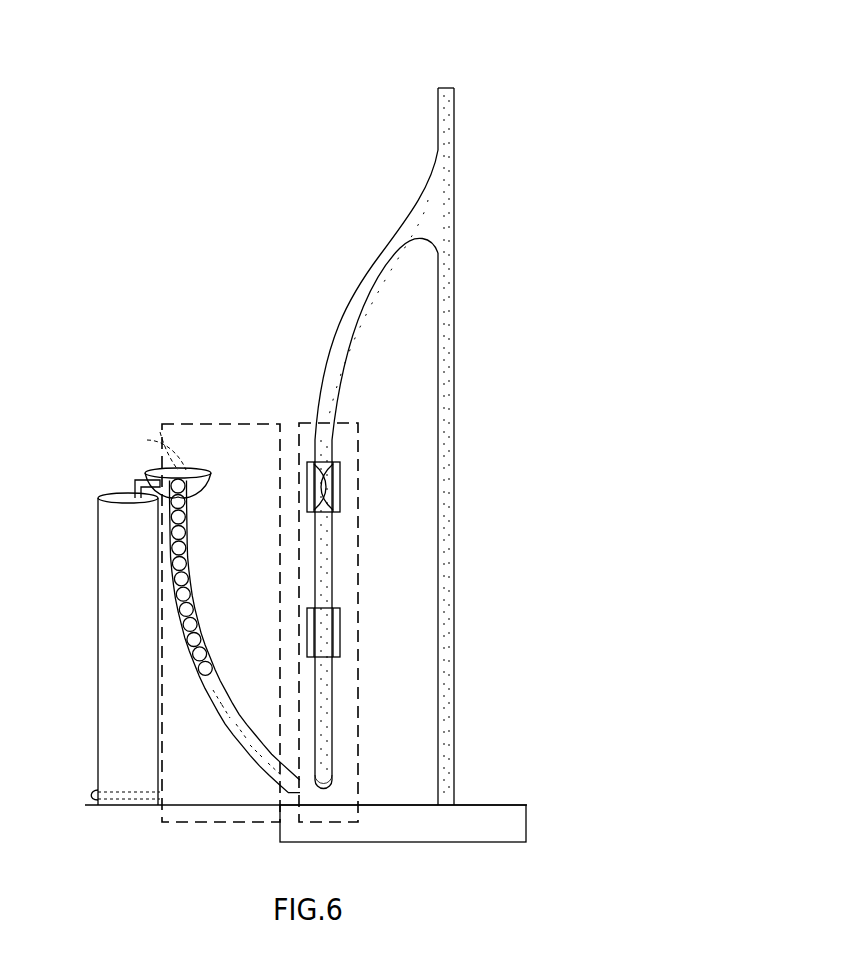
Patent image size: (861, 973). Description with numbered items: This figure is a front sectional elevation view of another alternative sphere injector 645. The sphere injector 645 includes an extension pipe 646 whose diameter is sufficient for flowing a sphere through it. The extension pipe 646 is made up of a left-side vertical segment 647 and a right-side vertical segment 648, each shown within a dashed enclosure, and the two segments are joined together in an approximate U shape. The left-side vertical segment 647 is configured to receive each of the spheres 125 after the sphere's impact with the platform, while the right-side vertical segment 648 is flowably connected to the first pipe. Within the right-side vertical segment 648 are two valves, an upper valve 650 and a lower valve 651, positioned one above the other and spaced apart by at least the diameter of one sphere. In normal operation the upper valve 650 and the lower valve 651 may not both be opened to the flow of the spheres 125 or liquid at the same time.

The sphere injector 645 is at (143, 165).
The extension pipe 646 is at (348, 292).
The left-side vertical segment 647 is at (162, 424).
The right-side vertical segment 648 is at (304, 422).
The upper valve 650 is at (338, 490).
The lower valve 651 is at (338, 633).
The spheres 125 is at (190, 593).